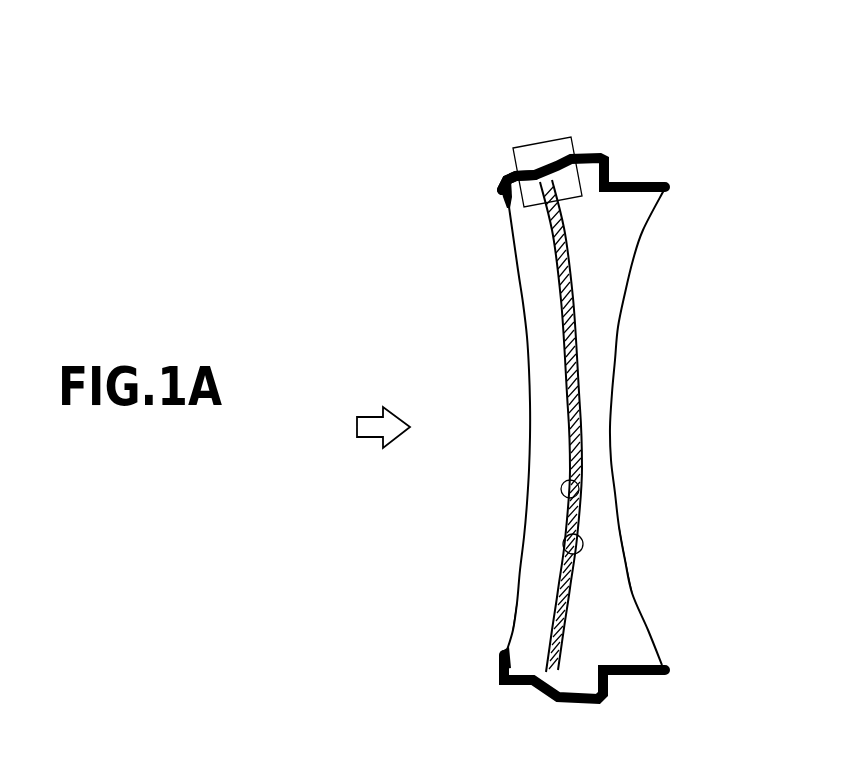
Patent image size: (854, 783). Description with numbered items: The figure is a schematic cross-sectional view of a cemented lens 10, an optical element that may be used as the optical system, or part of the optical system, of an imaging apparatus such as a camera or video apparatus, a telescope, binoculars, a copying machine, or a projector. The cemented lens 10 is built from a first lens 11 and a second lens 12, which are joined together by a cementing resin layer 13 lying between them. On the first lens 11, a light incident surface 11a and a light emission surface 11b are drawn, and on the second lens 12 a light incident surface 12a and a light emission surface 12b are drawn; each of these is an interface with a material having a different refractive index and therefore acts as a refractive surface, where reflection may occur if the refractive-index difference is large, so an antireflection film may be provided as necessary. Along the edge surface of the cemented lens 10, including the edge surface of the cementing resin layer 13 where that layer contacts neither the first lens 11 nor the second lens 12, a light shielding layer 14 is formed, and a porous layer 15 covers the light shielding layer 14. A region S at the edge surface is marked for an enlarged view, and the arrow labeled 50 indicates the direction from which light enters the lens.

The cemented lens 10 is at (640, 89).
The first lens 11 is at (530, 300).
The light incident surface 11a is at (517, 612).
The light emission surface 11b is at (568, 557).
The second lens 12 is at (618, 277).
The light incident surface 12a is at (577, 505).
The light emission surface 12b is at (628, 570).
The cementing resin layer 13 is at (580, 402).
The light shielding layer 14 is at (638, 182).
The porous layer 15 is at (503, 178).
The region S is at (537, 147).
The incident light 50 is at (407, 422).